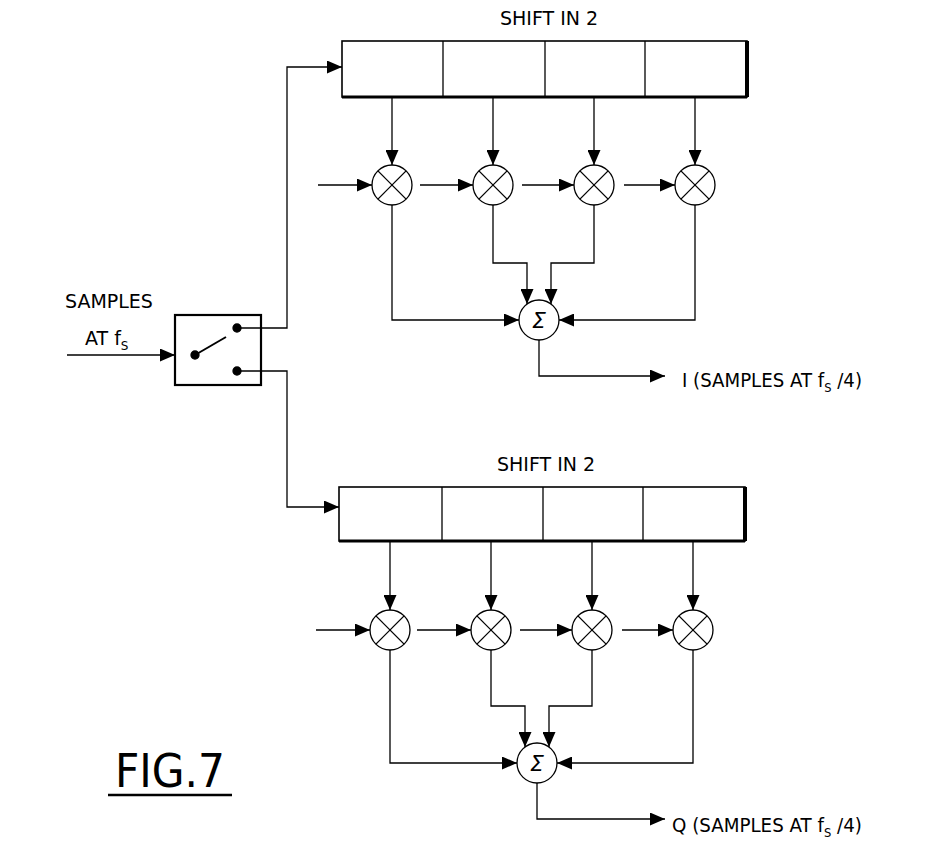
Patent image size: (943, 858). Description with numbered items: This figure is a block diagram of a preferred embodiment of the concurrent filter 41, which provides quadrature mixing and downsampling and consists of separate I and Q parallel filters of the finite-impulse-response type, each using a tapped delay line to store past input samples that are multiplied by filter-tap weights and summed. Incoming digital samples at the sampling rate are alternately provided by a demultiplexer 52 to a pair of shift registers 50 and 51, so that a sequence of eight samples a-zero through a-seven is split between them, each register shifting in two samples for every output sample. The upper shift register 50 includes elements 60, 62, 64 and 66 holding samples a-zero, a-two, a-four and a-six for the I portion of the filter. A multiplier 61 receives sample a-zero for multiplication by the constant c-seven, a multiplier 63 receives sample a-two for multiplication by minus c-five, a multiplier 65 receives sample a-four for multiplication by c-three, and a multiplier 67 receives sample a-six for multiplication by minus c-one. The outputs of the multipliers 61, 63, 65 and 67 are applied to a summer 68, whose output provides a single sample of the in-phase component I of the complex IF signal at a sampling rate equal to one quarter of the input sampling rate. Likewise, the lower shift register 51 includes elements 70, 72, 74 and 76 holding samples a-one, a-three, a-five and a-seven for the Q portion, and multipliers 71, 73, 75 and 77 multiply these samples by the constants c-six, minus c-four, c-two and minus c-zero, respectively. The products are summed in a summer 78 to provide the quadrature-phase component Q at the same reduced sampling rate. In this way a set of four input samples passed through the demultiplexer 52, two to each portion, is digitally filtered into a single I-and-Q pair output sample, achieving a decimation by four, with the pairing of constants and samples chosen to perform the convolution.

The concurrent filter 41 is at (205, 451).
The shift register 50 is at (569, 82).
The shift register 51 is at (571, 525).
The demultiplexer 52 is at (214, 315).
The shift register element 60 is at (720, 99).
The multiplier 61 is at (685, 206).
The shift register element 62 is at (618, 99).
The multiplier 63 is at (584, 206).
The shift register element 64 is at (516, 99).
The multiplier 65 is at (483, 206).
The shift register element 66 is at (416, 99).
The multiplier 67 is at (381, 206).
The summer 68 is at (526, 337).
The shift register element 70 is at (720, 543).
The multiplier 71 is at (686, 651).
The shift register element 72 is at (617, 543).
The multiplier 73 is at (584, 651).
The shift register element 74 is at (515, 543).
The multiplier 75 is at (482, 651).
The shift register element 76 is at (414, 543).
The multiplier 77 is at (378, 651).
The summer 78 is at (523, 782).